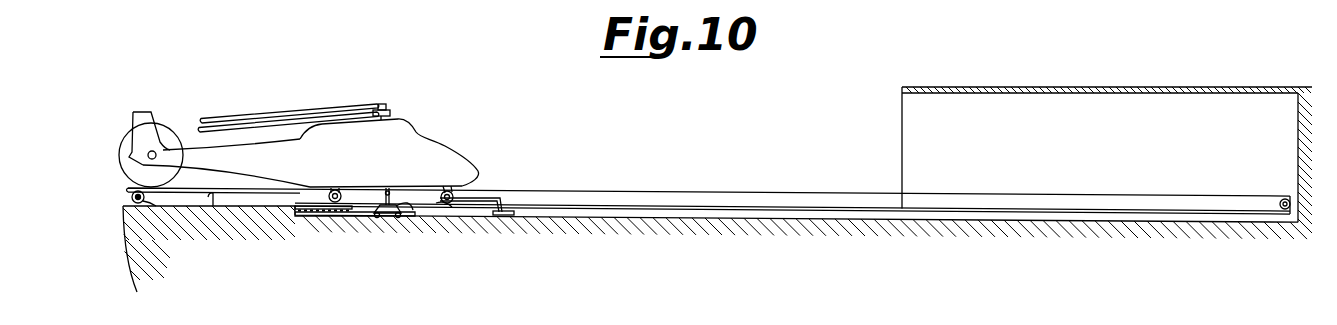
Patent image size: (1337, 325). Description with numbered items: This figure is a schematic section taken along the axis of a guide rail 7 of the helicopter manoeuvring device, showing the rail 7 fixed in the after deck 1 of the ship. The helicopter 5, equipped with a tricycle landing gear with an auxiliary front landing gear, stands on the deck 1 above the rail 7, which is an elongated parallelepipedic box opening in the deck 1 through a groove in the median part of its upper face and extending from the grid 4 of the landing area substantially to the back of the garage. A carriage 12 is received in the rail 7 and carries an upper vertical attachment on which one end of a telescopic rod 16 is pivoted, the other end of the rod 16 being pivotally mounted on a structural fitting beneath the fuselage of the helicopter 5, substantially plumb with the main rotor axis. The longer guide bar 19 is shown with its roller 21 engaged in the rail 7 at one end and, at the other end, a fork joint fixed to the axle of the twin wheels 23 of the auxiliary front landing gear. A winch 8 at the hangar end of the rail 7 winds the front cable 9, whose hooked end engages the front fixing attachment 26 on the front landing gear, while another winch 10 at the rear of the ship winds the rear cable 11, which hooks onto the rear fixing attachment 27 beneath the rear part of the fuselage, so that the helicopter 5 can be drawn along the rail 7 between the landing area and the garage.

The after deck 1 is at (257, 207).
The grid 4 is at (305, 217).
The helicopter 5 is at (429, 136).
The guide rail 7 is at (822, 216).
The winch 8 is at (1286, 200).
The front cable 9 is at (996, 196).
The winch 10 is at (146, 203).
The rear cable 11 is at (213, 208).
The carriage 12 is at (386, 216).
The telescopic rod 16 is at (408, 210).
The guide bar 19 is at (486, 198).
The roller 21 is at (519, 216).
The twin wheels 23 is at (437, 210).
The front fixing attachment 26 is at (452, 192).
The rear fixing attachment 27 is at (307, 188).